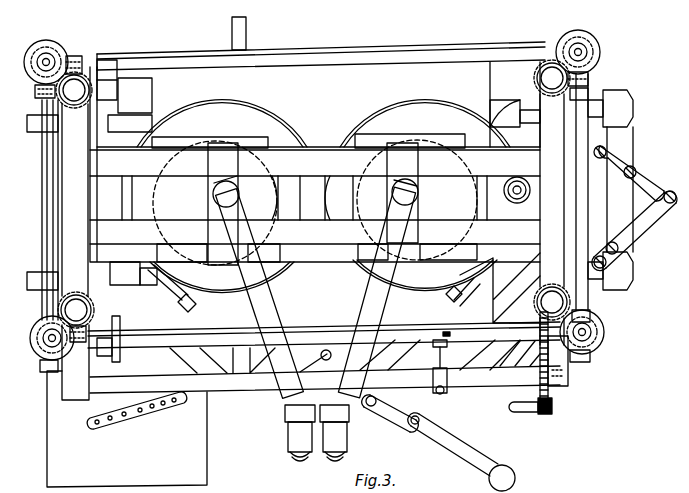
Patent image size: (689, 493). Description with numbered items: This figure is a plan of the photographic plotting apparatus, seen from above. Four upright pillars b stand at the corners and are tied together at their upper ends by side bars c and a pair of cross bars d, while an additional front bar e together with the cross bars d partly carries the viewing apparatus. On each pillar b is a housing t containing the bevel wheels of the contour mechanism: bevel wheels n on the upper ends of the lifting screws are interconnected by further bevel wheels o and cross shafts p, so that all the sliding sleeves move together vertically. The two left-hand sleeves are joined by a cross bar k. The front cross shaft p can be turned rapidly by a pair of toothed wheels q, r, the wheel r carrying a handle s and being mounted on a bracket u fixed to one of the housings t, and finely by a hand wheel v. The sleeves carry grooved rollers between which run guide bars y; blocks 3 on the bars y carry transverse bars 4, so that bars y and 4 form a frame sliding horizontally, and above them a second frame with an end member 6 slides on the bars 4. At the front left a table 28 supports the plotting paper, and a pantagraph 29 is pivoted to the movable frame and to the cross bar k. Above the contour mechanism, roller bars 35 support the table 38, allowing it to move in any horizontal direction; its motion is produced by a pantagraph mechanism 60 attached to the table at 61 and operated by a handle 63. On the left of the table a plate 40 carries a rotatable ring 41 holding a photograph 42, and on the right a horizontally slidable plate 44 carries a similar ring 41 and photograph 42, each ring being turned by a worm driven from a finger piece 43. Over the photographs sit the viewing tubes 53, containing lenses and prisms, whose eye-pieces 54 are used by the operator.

The housing t is at (37, 49).
The bevel wheel n is at (64, 47).
The bevel wheel o is at (37, 85).
The upright pillar b is at (78, 82).
The cross bar k is at (108, 88).
The table 38 is at (168, 66).
The transverse bar 4 is at (241, 31).
The cross shaft p is at (327, 60).
The guide bar y is at (33, 128).
The side bar c is at (66, 197).
The cross bar d is at (135, 165).
The plate 40 is at (270, 119).
The plate 44 is at (362, 119).
The rotatable ring 41 is at (213, 108).
The photograph 42 is at (216, 138).
The roller bar 35 is at (123, 119).
The finger piece 43 is at (191, 308).
The tube 53 is at (262, 294).
The eye-piece 54 is at (321, 452).
The front bar e is at (148, 386).
The hand wheel v is at (111, 352).
The table 28 is at (199, 445).
The pantagraph 29 is at (172, 410).
The toothed wheel q is at (535, 328).
The bracket u is at (562, 359).
The toothed wheel r is at (549, 406).
The handle s is at (513, 406).
The pantagraph mechanism 60 is at (446, 416).
The handle 63 is at (501, 468).
The block 3 is at (633, 99).
The attachment point 61 is at (607, 153).
The end member 6 is at (614, 224).